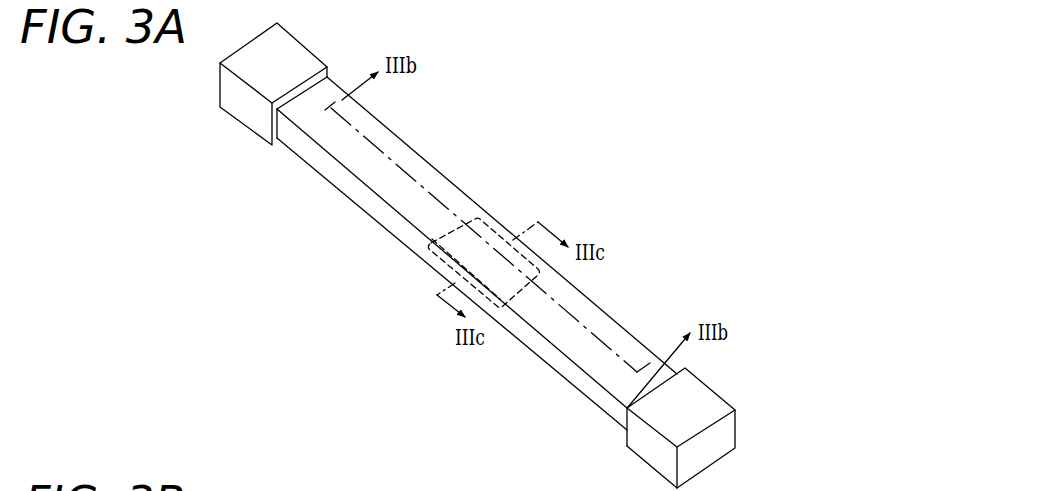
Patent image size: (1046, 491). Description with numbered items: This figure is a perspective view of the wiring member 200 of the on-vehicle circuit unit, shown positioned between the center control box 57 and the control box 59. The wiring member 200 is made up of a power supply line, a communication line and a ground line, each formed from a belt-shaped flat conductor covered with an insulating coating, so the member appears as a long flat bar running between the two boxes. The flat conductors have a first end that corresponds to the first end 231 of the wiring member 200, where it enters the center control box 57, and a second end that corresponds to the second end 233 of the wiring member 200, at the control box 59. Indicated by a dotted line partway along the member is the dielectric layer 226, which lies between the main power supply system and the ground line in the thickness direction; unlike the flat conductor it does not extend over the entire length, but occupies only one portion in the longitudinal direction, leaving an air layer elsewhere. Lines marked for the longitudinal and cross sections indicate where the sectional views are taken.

The wiring member 200 is at (643, 262).
The center control box 57 is at (282, 53).
The control box 59 is at (705, 402).
The dielectric layer 226 is at (487, 243).
The first end 231 is at (300, 95).
The second end 233 is at (647, 390).